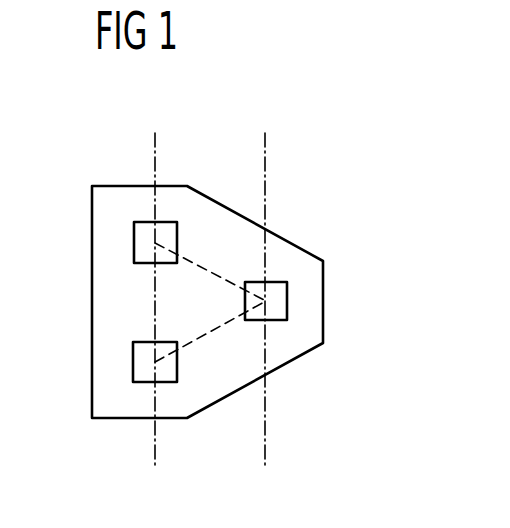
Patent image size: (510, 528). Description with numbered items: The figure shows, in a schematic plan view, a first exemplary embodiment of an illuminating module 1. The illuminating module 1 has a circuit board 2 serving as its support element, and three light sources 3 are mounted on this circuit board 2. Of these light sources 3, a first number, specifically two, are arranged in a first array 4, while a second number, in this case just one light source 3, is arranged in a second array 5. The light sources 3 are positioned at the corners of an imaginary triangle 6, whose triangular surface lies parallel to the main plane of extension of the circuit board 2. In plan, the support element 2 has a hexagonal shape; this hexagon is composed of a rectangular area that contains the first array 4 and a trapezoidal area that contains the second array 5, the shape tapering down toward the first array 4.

The illuminating module 1 is at (230, 289).
The circuit board 2 is at (323, 328).
The light sources 3 is at (143, 268).
The first array 4 is at (153, 150).
The second array 5 is at (264, 150).
The imaginary triangle 6 is at (200, 337).